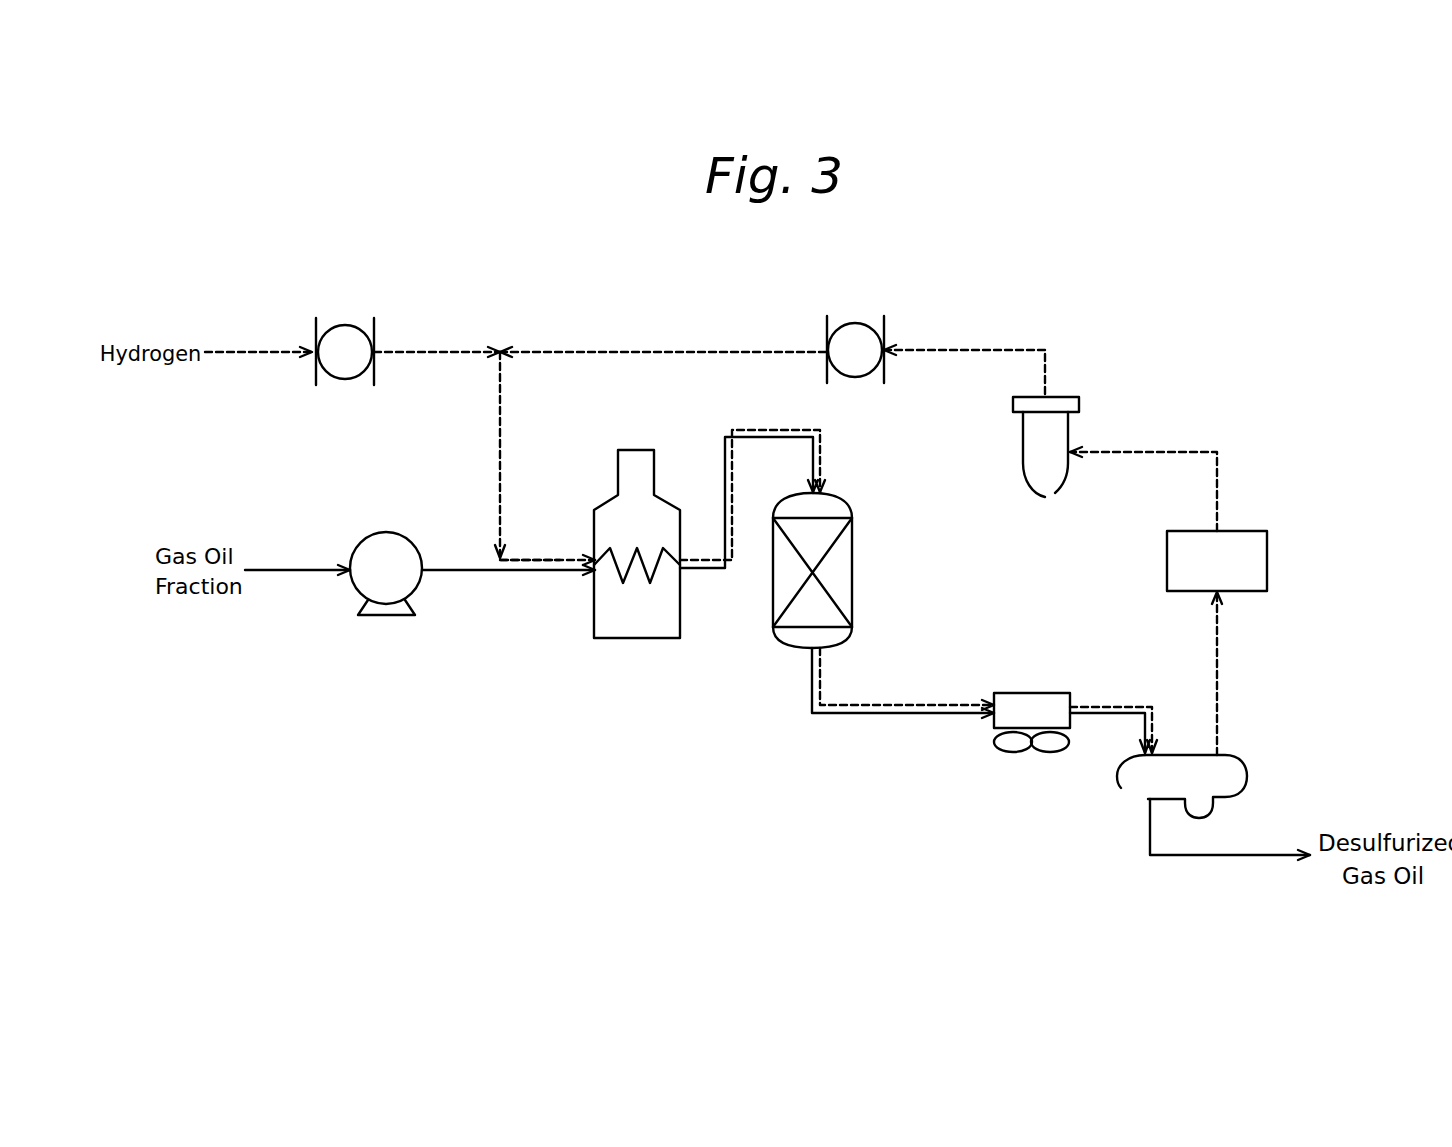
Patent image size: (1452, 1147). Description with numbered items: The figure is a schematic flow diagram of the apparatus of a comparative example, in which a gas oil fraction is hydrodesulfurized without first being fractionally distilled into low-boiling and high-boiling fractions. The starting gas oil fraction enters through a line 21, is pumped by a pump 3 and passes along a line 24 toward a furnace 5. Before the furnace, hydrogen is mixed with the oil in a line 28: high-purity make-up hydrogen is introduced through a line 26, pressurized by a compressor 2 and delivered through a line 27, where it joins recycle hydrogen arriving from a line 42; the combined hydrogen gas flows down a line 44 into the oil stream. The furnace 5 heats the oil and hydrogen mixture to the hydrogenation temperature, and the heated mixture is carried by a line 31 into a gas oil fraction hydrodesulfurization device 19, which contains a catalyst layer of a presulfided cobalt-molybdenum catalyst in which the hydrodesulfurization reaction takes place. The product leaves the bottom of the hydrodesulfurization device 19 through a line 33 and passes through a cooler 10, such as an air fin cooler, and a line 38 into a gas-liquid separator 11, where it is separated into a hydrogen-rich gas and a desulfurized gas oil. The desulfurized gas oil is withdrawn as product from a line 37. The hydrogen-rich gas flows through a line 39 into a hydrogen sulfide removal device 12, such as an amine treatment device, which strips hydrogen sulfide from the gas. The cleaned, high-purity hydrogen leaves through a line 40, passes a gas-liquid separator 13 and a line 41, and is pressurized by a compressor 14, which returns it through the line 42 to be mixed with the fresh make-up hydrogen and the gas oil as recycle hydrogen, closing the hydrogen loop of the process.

The compressor 2 is at (343, 325).
The pump 3 is at (384, 532).
The furnace 5 is at (642, 640).
The cooler 10 is at (1028, 692).
The gas-liquid separator 11 is at (1247, 777).
The hydrogen sulfide removal device 12 is at (1267, 557).
The gas-liquid separator 13 is at (1023, 440).
The compressor 14 is at (853, 323).
The gas oil fraction hydrodesulfurization device 19 is at (852, 577).
The line 21 is at (290, 571).
The line 24 is at (470, 571).
The line 26 is at (245, 350).
The line 27 is at (437, 350).
The line 28 is at (545, 560).
The line 31 is at (725, 457).
The line 33 is at (903, 705).
The line 37 is at (1225, 856).
The line 38 is at (1115, 707).
The line 39 is at (1220, 682).
The line 40 is at (1180, 452).
The line 41 is at (975, 349).
The line 42 is at (695, 349).
The line 44 is at (500, 427).